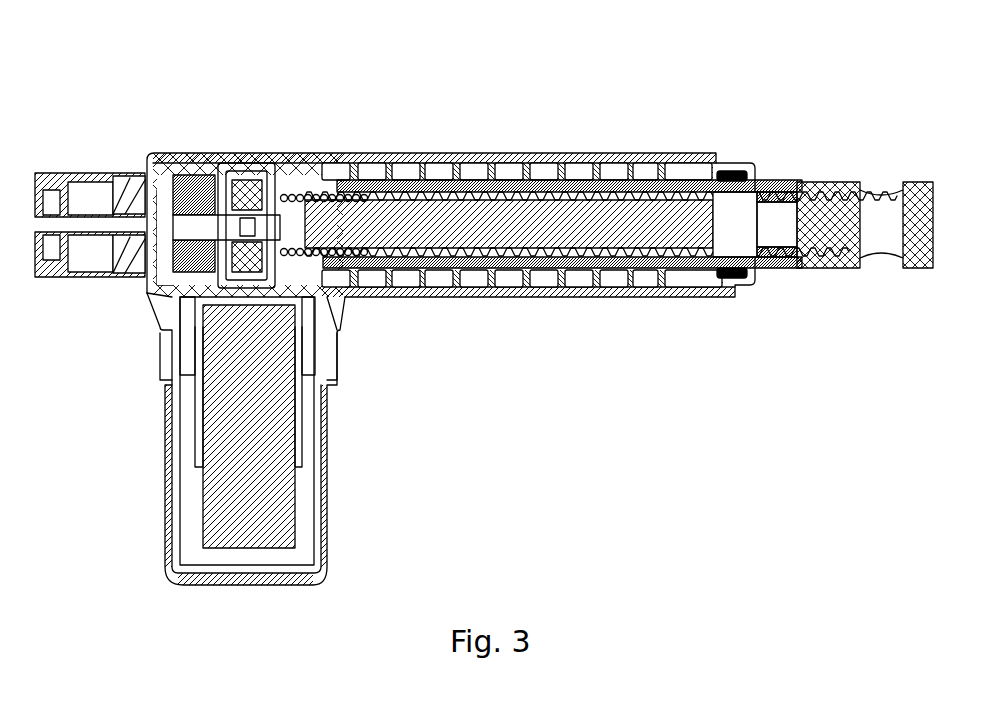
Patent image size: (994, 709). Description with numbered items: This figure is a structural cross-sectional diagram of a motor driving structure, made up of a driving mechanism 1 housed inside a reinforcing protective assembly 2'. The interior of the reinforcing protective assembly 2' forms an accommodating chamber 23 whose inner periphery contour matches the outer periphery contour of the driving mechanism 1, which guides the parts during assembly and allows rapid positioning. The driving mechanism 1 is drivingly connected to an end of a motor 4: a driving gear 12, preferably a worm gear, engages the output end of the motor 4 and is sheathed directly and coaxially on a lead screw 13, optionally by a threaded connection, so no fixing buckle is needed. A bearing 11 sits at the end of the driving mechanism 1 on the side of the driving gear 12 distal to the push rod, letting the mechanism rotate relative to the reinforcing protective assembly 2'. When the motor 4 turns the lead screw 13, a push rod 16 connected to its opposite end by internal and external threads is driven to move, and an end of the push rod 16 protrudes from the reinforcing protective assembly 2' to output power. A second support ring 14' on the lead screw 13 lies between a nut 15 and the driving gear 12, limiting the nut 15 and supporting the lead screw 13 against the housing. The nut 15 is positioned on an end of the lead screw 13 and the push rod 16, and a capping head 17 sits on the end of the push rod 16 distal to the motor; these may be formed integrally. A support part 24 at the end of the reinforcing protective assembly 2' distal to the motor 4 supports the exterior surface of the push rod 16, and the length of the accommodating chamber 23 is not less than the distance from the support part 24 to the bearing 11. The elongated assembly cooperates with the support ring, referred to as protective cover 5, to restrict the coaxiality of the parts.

The driving mechanism 1 is at (484, 100).
The reinforcing protective assembly 2' is at (451, 281).
The motor 4 is at (265, 453).
The protective cover 5 is at (730, 173).
The bearing 11 is at (200, 195).
The driving gear 12 is at (240, 180).
The lead screw 13 is at (268, 190).
The second support ring 14' is at (591, 174).
The nut 15 is at (368, 180).
The push rod 16 is at (535, 180).
The capping head 17 is at (922, 190).
The accommodating chamber 23 is at (675, 272).
The support part 24 is at (732, 288).